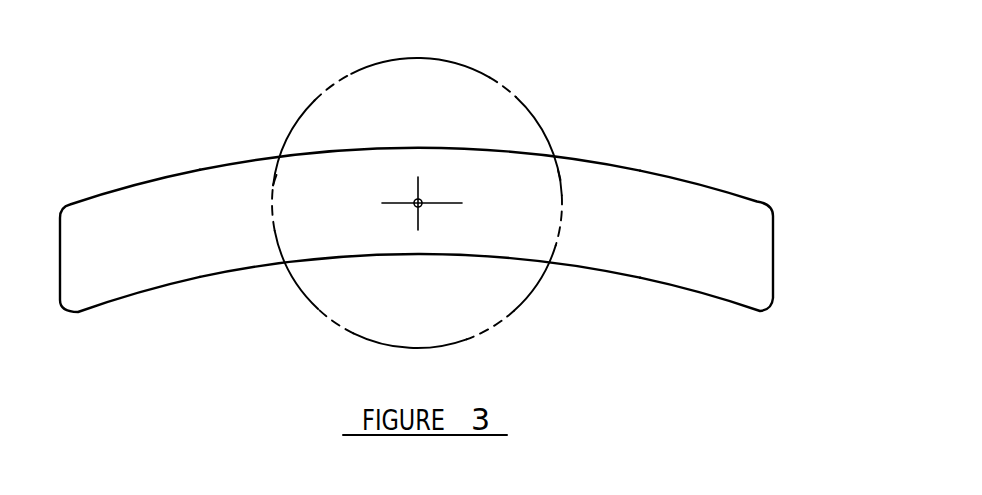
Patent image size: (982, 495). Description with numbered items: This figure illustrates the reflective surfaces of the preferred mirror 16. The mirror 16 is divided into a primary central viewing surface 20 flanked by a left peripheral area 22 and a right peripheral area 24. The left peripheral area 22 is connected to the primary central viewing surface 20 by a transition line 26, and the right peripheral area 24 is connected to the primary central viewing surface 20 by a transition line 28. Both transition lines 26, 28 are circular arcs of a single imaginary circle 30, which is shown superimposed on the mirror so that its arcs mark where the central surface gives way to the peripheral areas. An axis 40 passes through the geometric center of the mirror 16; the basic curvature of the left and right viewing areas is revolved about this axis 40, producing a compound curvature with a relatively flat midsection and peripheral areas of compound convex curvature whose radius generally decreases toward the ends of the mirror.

The mirror 16 is at (416, 233).
The primary central viewing surface 20 is at (495, 238).
The left peripheral area 22 is at (137, 265).
The right peripheral area 24 is at (687, 263).
The transition line 26 is at (272, 182).
The transition line 28 is at (560, 170).
The imaginary circle 30 is at (533, 112).
The axis 40 is at (417, 204).